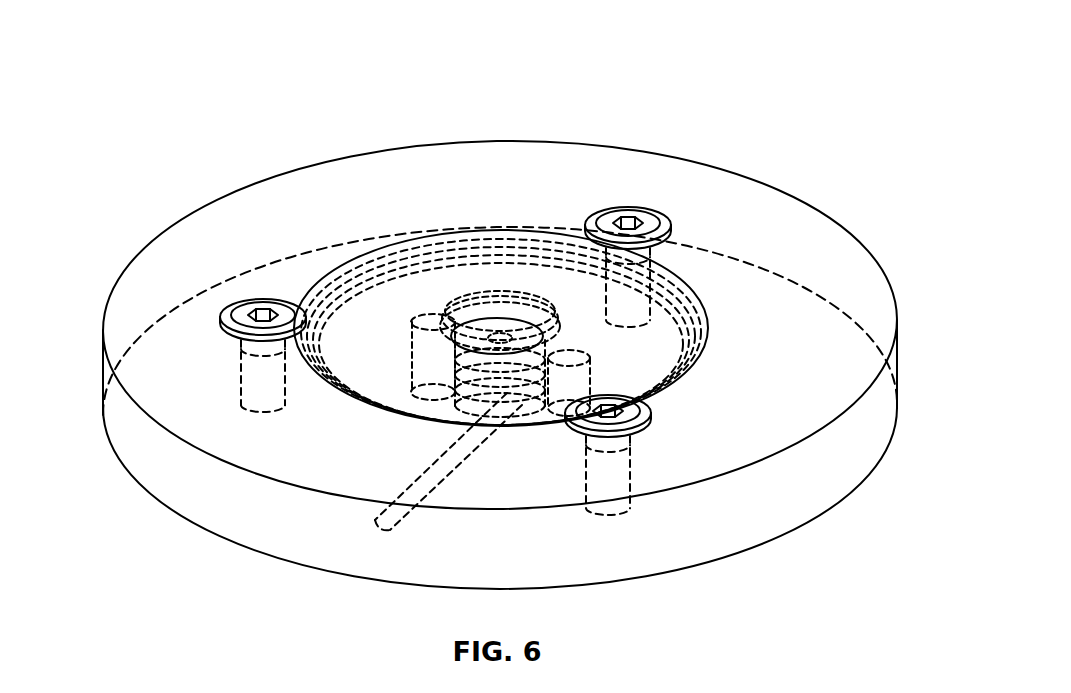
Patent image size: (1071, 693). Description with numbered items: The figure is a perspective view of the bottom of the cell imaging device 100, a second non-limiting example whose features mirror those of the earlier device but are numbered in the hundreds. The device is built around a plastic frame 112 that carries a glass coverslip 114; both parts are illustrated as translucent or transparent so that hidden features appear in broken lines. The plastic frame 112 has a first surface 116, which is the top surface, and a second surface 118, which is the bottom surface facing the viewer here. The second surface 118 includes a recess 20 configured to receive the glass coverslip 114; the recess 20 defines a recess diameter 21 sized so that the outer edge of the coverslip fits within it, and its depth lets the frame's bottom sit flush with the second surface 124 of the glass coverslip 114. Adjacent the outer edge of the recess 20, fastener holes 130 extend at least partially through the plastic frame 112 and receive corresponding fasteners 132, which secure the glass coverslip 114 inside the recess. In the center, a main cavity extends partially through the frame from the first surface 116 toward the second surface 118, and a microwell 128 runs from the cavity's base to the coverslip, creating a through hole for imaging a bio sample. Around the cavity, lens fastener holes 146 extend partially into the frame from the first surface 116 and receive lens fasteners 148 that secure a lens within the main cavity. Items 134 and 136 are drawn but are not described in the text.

The cell imaging device 100 is at (176, 97).
The plastic frame 112 is at (811, 199).
The glass coverslip 114 is at (695, 364).
The first surface 116 is at (207, 540).
The second surface 118 is at (283, 212).
The second surface 124 is at (426, 305).
The microwell 128 is at (500, 327).
The fastener hole 130 is at (247, 407).
The fastener 132 is at (222, 312).
The recess 134 is at (360, 393).
The pin 136 is at (455, 317).
The lens fastener hole 146 is at (530, 388).
The lens fastener 148 is at (570, 443).
The recess 20 is at (676, 267).
The recess diameter 21 is at (693, 285).